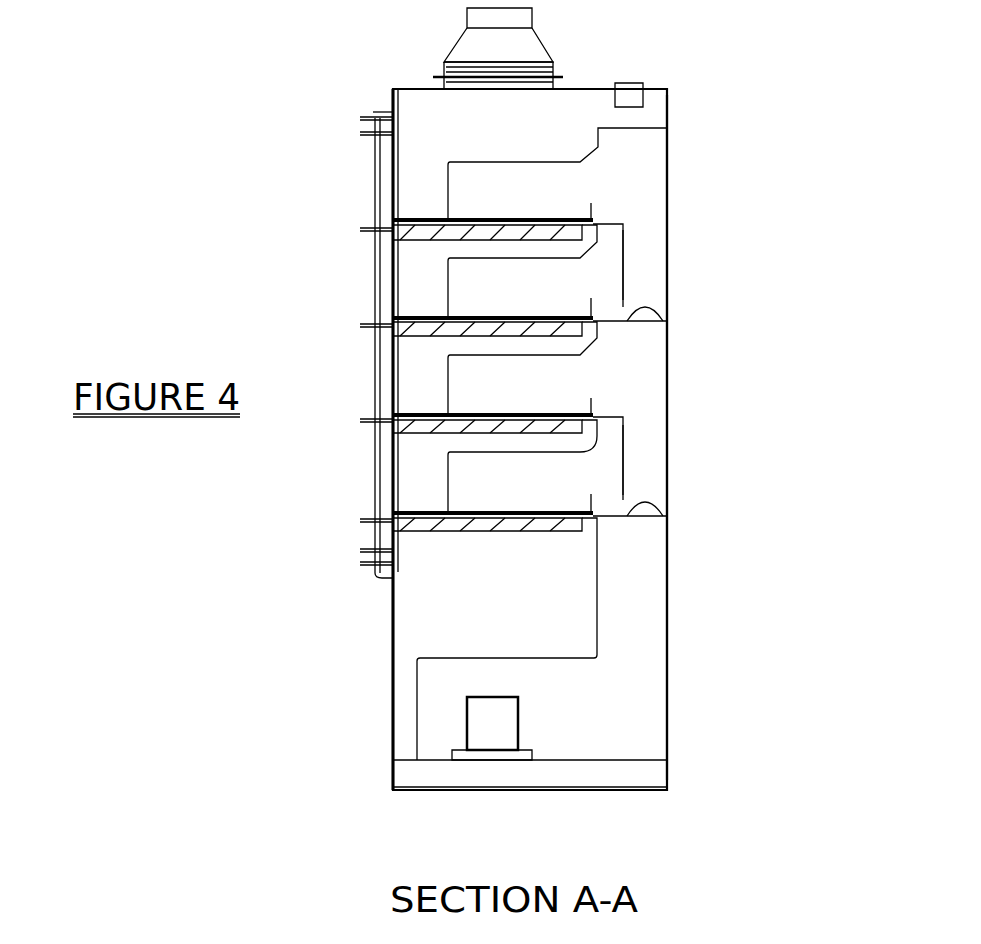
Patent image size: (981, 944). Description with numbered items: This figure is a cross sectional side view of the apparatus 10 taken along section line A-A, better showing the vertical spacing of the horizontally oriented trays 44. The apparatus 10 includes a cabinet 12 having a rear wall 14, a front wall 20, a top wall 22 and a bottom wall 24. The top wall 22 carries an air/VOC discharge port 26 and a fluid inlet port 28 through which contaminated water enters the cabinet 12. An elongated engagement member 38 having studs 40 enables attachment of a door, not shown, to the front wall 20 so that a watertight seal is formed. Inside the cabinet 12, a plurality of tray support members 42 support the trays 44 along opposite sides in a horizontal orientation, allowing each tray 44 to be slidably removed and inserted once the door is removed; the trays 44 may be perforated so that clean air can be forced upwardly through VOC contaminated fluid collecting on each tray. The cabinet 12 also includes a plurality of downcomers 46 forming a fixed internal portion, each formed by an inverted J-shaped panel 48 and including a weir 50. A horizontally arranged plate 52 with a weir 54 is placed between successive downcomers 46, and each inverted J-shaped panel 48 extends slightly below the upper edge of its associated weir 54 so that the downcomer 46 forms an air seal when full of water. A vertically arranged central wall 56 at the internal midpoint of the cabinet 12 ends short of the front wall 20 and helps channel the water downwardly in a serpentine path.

The apparatus 10 is at (255, 75).
The cabinet 12 is at (657, 84).
The rear wall 14 is at (667, 116).
The front wall 20 is at (392, 90).
The top wall 22 is at (572, 88).
The bottom wall 24 is at (632, 760).
The air/VOC discharge port 26 is at (461, 48).
The fluid inlet port 28 is at (619, 82).
The elongated engagement member 38 is at (386, 162).
The studs 40 is at (366, 422).
The tray support members 42 is at (420, 232).
The trays 44 is at (465, 212).
The downcomers 46 is at (627, 244).
The inverted J-shaped panel 48 is at (624, 280).
The weir 50 is at (591, 205).
The horizontally arranged plate 52 is at (667, 322).
The weir 54 is at (591, 300).
The central wall 56 is at (618, 135).